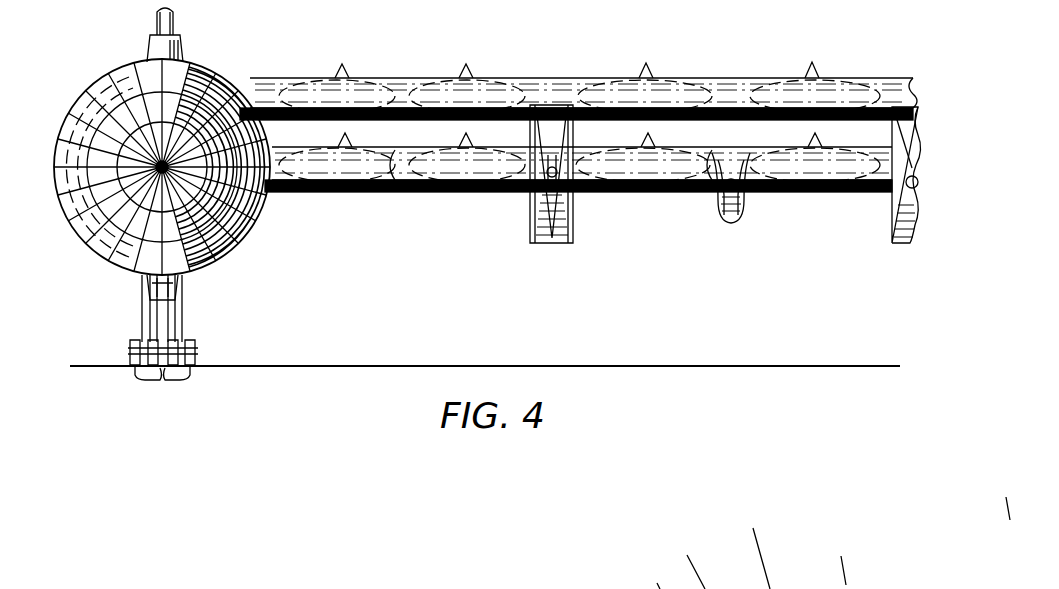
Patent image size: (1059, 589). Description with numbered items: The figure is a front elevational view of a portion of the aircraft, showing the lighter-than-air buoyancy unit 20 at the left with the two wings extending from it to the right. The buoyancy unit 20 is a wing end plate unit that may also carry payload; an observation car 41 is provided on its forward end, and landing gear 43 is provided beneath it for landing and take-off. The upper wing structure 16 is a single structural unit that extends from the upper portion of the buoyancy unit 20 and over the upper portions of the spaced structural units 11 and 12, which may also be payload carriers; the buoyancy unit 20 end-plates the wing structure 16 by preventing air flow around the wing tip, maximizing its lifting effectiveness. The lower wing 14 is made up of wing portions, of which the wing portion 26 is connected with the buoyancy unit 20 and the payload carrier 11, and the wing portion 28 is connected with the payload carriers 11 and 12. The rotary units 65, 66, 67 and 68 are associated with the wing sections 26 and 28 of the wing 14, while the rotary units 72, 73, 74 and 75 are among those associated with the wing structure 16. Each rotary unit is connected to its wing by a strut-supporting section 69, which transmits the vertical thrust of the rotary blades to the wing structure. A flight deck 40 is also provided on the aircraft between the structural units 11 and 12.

The structural unit 11 is at (550, 245).
The structural unit 12 is at (905, 246).
The wing 14 is at (508, 193).
The wing structure 16 is at (745, 78).
The buoyancy unit 20 is at (117, 285).
The wing portion 26 is at (388, 168).
The wing portion 28 is at (686, 178).
The flight deck 40 is at (732, 226).
The observation car 41 is at (180, 280).
The landing gear 43 is at (163, 380).
The rotary unit 65 is at (305, 186).
The rotary unit 66 is at (447, 182).
The rotary unit 67 is at (620, 196).
The rotary unit 68 is at (800, 196).
The strut-supporting section 69 is at (342, 64).
The rotary unit 72 is at (845, 80).
The rotary unit 73 is at (665, 80).
The rotary unit 74 is at (495, 80).
The rotary unit 75 is at (370, 80).